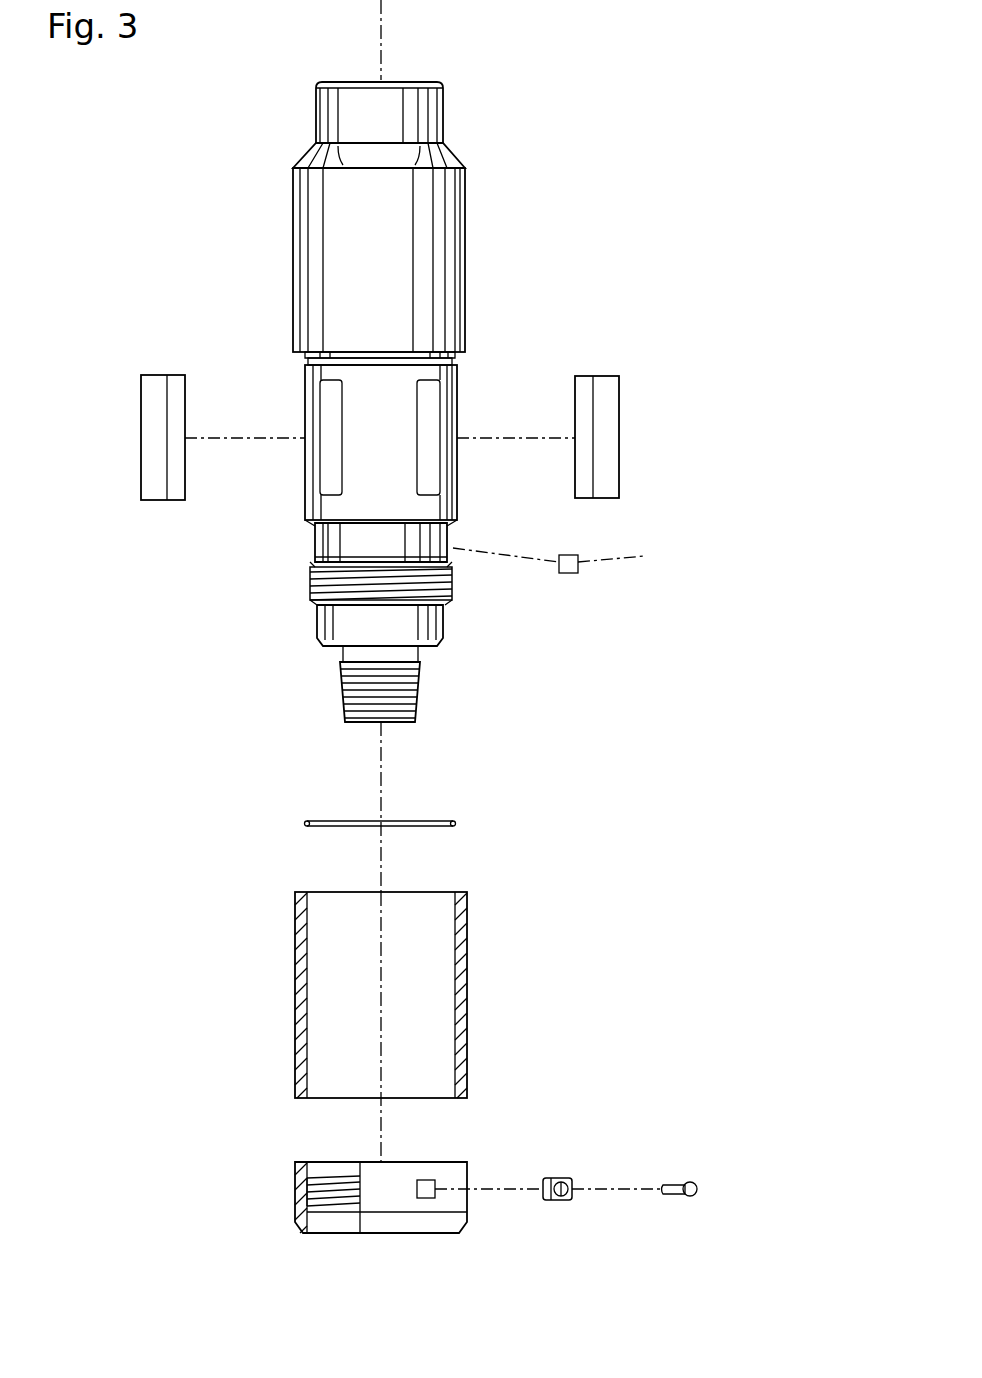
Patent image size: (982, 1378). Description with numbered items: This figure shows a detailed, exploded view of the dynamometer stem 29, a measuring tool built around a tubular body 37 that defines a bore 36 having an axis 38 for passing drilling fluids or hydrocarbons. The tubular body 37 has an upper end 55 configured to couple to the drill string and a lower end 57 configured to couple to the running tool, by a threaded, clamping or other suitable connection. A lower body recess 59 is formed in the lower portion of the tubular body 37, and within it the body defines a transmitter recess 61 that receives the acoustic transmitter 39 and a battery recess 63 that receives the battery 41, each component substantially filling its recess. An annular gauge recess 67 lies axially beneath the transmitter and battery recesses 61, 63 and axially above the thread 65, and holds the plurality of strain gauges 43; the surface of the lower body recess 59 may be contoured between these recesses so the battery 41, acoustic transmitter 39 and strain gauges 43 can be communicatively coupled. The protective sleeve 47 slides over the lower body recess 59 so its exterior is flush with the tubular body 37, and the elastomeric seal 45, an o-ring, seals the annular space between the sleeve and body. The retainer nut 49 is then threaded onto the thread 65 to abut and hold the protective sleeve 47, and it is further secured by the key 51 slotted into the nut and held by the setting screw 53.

The dynamometer stem 29 is at (590, 686).
The bore 36 is at (341, 70).
The tubular body 37 is at (465, 220).
The axis 38 is at (381, 15).
The acoustic transmitter 39 is at (610, 415).
The battery 41 is at (152, 410).
The strain gauges 43 is at (563, 560).
The elastomeric seals 45 is at (458, 822).
The protective sleeve 47 is at (467, 975).
The retainer nut 49 is at (430, 1160).
The key 51 is at (562, 1178).
The setting screw 53 is at (700, 1189).
The upper end 55 is at (445, 105).
The lower end 57 is at (340, 690).
The lower body recess 59 is at (455, 470).
The transmitter recess 61 is at (430, 405).
The battery recess 63 is at (330, 468).
The thread 65 is at (310, 577).
The annular gauge recess 67 is at (358, 540).